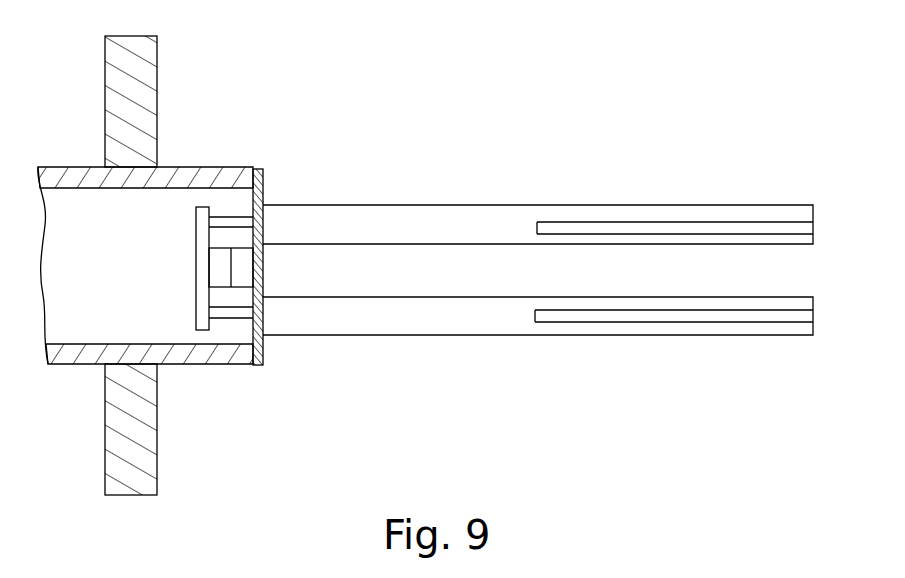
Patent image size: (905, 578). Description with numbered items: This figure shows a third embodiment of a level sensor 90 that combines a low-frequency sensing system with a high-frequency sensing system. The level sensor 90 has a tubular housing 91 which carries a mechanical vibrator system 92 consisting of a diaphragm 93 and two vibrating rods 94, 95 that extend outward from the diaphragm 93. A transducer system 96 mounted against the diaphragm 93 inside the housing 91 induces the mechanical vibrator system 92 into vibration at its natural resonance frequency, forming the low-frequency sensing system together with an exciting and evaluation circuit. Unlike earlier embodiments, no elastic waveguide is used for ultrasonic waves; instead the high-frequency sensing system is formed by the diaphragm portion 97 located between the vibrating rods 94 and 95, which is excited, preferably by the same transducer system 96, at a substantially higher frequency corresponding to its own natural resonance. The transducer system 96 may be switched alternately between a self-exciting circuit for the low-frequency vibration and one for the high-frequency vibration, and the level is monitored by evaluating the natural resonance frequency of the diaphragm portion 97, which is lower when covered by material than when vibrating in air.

The level sensor 90 is at (435, 236).
The tubular housing 91 is at (194, 178).
The mechanical vibrator system 92 is at (392, 150).
The diaphragm 93 is at (263, 340).
The vibrating rod 94 is at (442, 220).
The vibrating rod 95 is at (413, 310).
The transducer system 96 is at (170, 248).
The diaphragm portion 97 is at (265, 269).